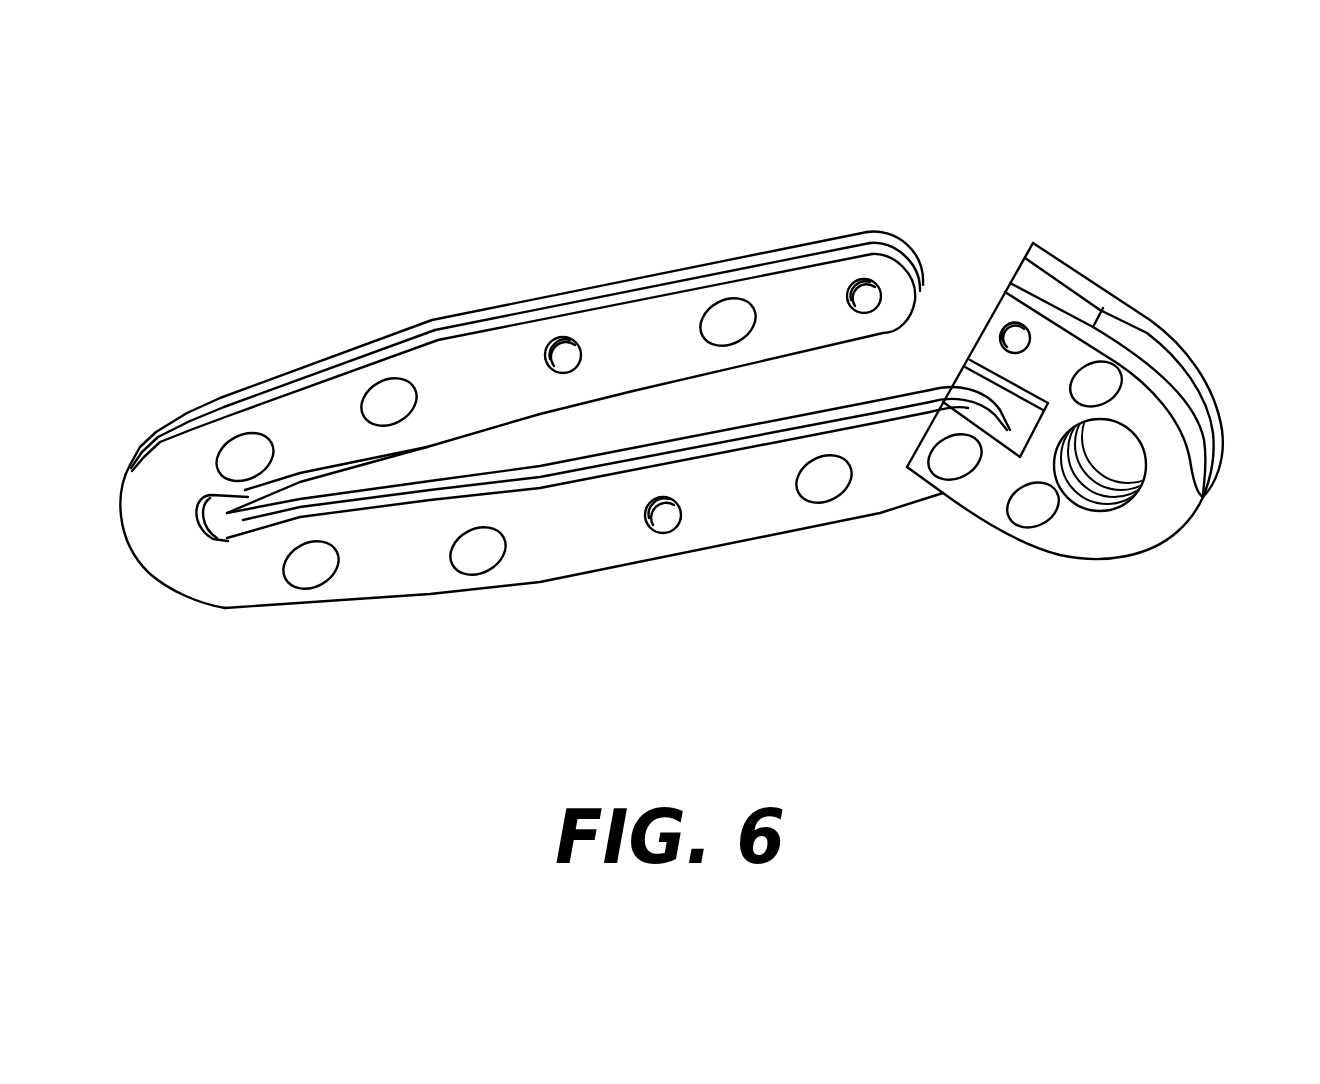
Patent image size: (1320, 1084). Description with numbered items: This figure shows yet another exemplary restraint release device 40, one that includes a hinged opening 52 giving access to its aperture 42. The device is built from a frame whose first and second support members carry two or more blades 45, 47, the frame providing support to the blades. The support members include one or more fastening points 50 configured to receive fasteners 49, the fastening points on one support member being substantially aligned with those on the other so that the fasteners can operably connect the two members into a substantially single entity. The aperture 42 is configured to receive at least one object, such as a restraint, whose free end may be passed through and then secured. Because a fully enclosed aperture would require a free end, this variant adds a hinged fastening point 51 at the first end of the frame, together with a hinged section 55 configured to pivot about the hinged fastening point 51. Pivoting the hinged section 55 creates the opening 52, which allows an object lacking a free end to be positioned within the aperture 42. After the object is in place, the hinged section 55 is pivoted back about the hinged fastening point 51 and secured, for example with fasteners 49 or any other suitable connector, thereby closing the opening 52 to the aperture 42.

The restraint release device 40 is at (1194, 111).
The aperture 42 is at (633, 428).
The blade 45 is at (249, 521).
The blade 47 is at (240, 506).
The fasteners 49 is at (478, 552).
The fastening points 50 is at (545, 340).
The hinged fastening point 51 is at (958, 460).
The hinged opening 52 is at (953, 279).
The hinged section 55 is at (1178, 532).